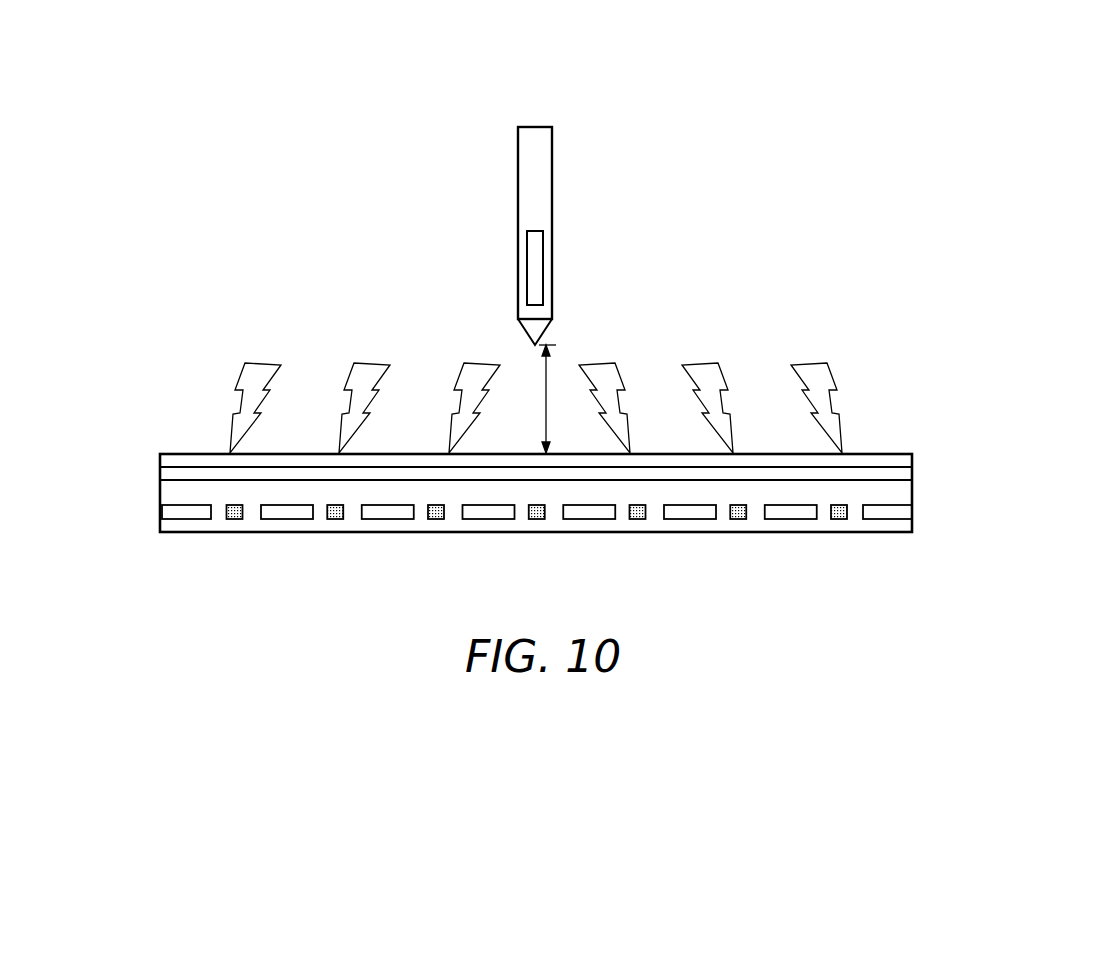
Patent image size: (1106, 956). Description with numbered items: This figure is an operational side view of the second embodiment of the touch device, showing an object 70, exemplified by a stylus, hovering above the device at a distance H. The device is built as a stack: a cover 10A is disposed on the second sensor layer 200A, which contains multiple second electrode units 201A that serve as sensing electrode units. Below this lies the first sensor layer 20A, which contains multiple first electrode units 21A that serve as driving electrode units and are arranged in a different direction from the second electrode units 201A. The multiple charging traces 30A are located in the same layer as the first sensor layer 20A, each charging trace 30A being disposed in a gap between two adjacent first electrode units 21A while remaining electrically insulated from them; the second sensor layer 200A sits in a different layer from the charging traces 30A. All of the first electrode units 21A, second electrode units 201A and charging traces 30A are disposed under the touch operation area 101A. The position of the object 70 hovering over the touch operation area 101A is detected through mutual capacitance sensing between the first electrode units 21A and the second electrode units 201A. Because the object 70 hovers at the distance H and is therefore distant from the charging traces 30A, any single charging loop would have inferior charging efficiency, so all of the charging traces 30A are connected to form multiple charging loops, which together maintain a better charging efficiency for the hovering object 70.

The object 70 is at (535, 143).
The distance H is at (557, 399).
The cover 10A is at (551, 487).
The touch operation area 101A is at (187, 453).
The second sensor layer 200A is at (914, 473).
The second electrode units 201A is at (883, 473).
The first sensor layer 20A is at (914, 515).
The first electrode units 21A is at (896, 513).
The charging traces 30A is at (236, 520).